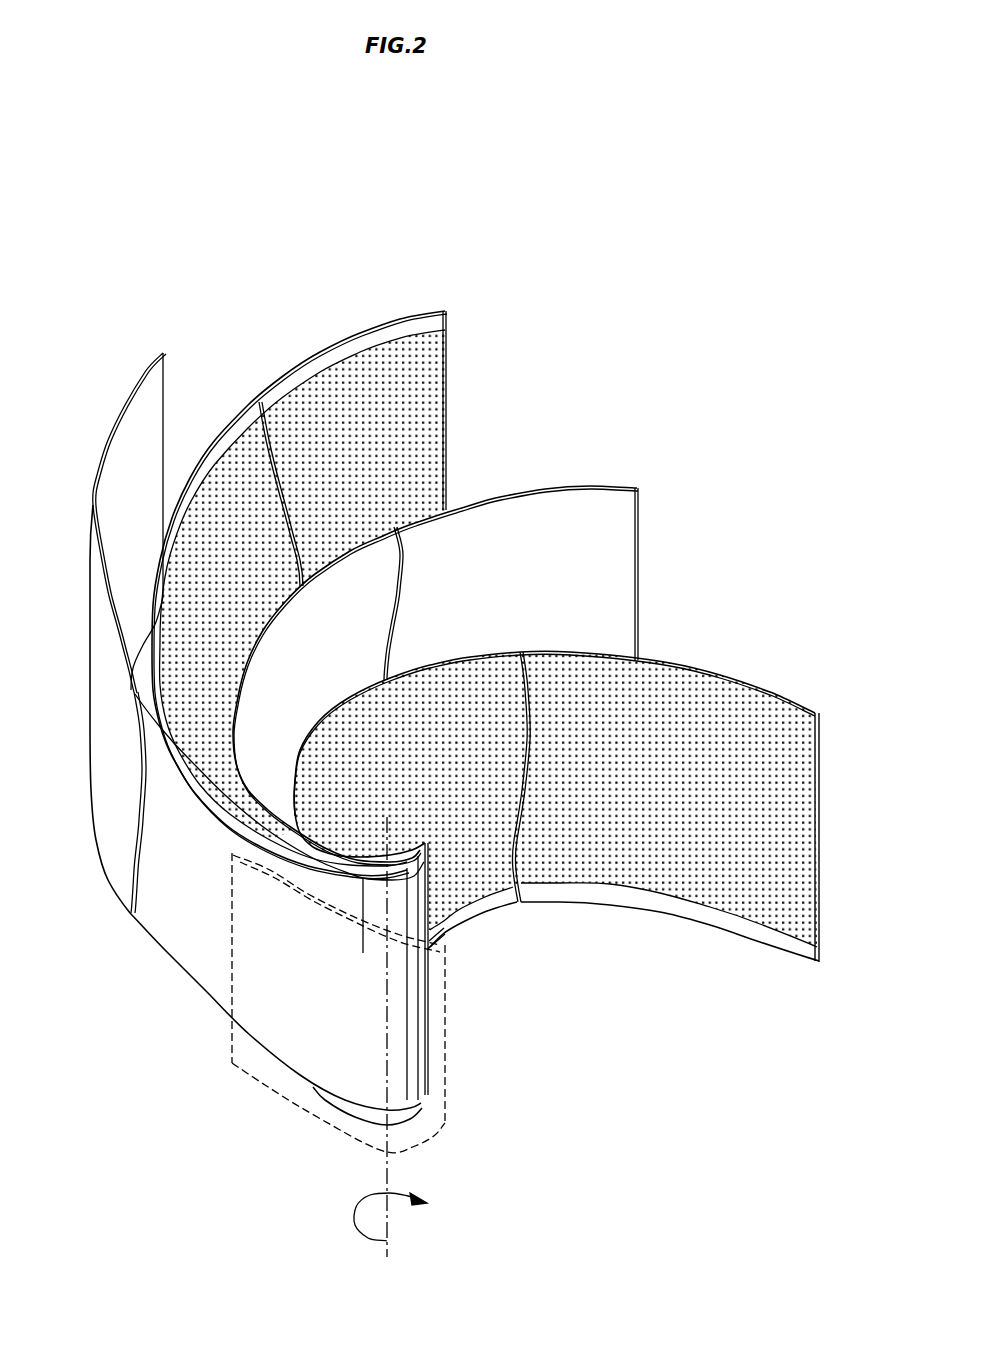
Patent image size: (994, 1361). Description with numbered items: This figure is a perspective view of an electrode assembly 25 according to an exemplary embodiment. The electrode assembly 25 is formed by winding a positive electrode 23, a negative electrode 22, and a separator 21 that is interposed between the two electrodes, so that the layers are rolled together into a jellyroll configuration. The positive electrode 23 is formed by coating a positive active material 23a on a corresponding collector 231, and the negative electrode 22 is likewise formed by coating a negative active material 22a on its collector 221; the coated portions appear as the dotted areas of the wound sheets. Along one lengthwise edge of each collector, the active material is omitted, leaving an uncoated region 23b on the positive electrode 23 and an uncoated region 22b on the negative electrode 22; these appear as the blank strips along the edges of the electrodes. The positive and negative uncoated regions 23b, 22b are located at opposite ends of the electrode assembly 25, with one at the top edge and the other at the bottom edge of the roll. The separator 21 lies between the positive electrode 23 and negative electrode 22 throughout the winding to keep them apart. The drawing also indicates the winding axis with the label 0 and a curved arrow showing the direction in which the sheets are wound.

The separator 21 is at (637, 490).
The negative electrode 22 is at (593, 861).
The negative active material 22a is at (712, 710).
The uncoated region of negative electrode 22b is at (678, 915).
The collector of negative electrode 221 is at (820, 783).
The positive electrode 23 is at (342, 670).
The positive active material 23a is at (417, 457).
The uncoated region of positive electrode 23b is at (368, 345).
The collector of positive electrode 231 is at (444, 406).
The electrode assembly 25 is at (126, 285).
The winding axis 0 is at (390, 1053).